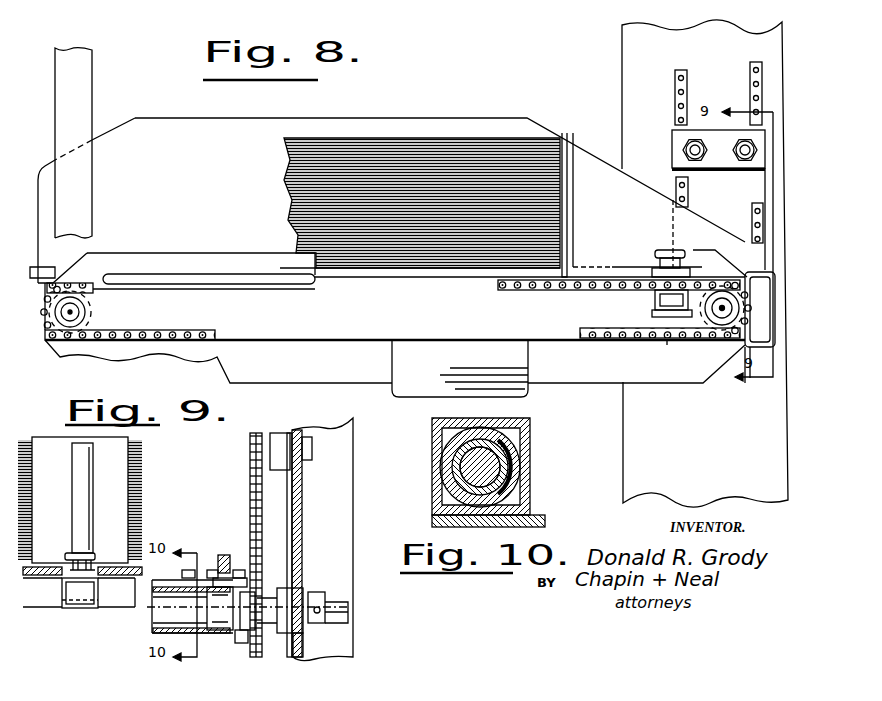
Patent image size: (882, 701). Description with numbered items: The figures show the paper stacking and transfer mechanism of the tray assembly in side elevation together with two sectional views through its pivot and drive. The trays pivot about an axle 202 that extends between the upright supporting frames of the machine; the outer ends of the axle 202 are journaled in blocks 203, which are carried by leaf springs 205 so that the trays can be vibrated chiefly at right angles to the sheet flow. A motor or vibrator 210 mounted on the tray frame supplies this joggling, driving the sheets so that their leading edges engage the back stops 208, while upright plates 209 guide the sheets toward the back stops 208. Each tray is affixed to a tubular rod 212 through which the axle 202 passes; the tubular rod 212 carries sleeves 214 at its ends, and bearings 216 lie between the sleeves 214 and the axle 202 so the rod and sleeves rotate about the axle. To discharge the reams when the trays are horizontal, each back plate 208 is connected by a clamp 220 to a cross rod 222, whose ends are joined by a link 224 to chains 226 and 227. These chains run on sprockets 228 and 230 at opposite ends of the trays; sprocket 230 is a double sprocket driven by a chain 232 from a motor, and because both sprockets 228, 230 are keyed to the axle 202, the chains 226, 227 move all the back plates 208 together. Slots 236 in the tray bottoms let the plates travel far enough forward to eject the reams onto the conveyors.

In FIG. 9, the axle 202 is at (340, 597).
In FIG. 10, the axle 202 is at (460, 468).
In FIG. 9, the blocks 203 is at (302, 637).
In FIG. 8, the leaf springs 205 is at (745, 201).
In FIG. 9, the leaf springs 205 is at (277, 508).
In FIG. 8, the back stops 208 is at (575, 150).
In FIG. 9, the back stops 208 is at (66, 470).
In FIG. 8, the upright plates 209 is at (447, 100).
In FIG. 8, the vibrator 210 is at (472, 364).
In FIG. 8, the tubular rod 212 is at (690, 323).
In FIG. 9, the tubular rod 212 is at (202, 587).
In FIG. 10, the tubular rod 212 is at (530, 420).
In FIG. 10, the sleeves 214 is at (512, 500).
In FIG. 10, the bearings 216 is at (513, 472).
In FIG. 8, the clamp 220 is at (655, 312).
In FIG. 9, the clamp 220 is at (108, 603).
In FIG. 8, the cross rod 222 is at (655, 298).
In FIG. 9, the cross rod 222 is at (45, 605).
In FIG. 8, the link 224 is at (640, 272).
In FIG. 9, the link 224 is at (236, 567).
In FIG. 8, the chain 226 is at (563, 290).
In FIG. 9, the chain 227 is at (248, 643).
In FIG. 8, the sprocket 228 is at (693, 317).
In FIG. 9, the double sprocket 230 is at (263, 592).
In FIG. 8, the chain 232 is at (675, 80).
In FIG. 9, the chain 232 is at (251, 487).
In FIG. 9, the slots 236 is at (67, 557).